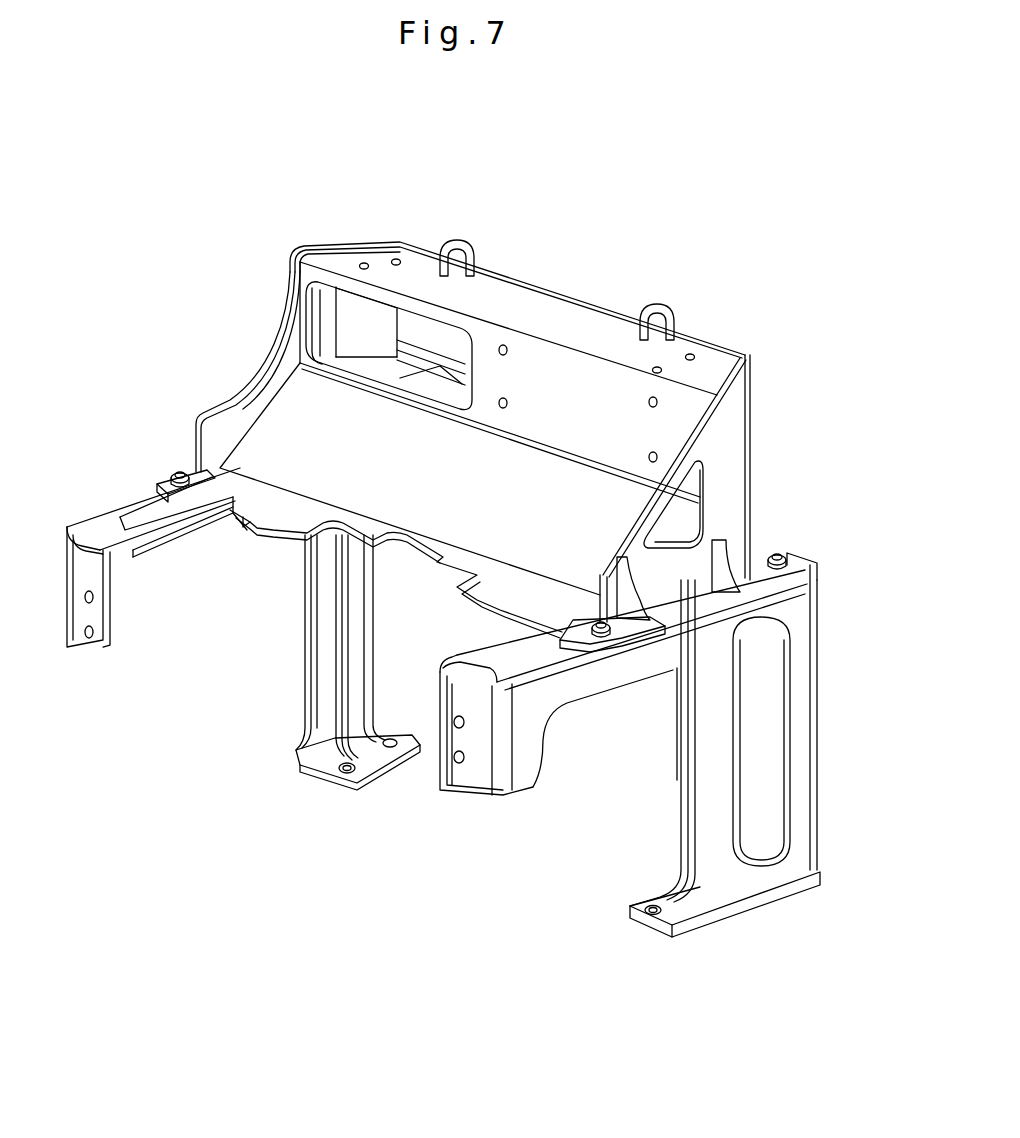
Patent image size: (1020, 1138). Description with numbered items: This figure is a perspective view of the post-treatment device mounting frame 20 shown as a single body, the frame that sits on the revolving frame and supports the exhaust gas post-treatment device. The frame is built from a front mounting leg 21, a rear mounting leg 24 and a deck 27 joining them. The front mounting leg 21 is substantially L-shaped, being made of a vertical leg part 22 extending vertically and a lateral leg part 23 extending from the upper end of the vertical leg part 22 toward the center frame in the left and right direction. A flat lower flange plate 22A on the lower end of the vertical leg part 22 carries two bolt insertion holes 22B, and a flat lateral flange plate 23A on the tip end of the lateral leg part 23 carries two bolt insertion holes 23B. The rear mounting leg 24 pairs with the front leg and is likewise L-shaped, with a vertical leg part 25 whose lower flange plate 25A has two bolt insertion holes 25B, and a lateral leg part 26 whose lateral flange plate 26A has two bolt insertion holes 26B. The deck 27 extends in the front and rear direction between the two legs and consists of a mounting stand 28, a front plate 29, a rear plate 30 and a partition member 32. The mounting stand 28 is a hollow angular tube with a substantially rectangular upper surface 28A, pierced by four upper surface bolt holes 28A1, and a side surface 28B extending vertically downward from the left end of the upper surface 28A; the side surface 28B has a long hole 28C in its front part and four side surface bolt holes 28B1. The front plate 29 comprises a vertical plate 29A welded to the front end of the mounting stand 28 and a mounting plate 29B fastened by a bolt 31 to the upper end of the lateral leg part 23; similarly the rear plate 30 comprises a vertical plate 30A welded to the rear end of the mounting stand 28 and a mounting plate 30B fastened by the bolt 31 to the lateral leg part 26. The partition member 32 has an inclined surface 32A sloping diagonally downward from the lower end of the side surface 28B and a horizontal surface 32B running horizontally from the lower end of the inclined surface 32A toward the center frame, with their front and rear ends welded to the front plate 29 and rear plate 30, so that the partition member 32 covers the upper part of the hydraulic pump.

The post-treatment device mounting frame 20 is at (293, 236).
The front mounting leg 21 is at (302, 639).
The vertical leg part 22 is at (322, 680).
The lower flange plate 22A is at (310, 758).
The bolt insertion holes 22B is at (347, 776).
The lateral leg part 23 is at (155, 530).
The lateral flange plate 23A is at (88, 560).
The bolt insertion holes 23B is at (90, 645).
The rear mounting leg 24 is at (682, 804).
The vertical leg part 25 is at (800, 728).
The lower flange plate 25A is at (757, 903).
The bolt insertion holes 25B is at (652, 914).
The lateral leg part 26 is at (583, 672).
The lateral flange plate 26A is at (480, 745).
The bolt insertion holes 26B is at (458, 763).
The deck 27 is at (550, 292).
The mounting stand 28 is at (733, 355).
The upper surface 28A is at (505, 300).
The upper surface bolt holes 28A1 is at (365, 262).
The side surface 28B is at (598, 400).
The side surface bolt holes 28B1 is at (503, 408).
The long hole 28C is at (430, 322).
The front plate 29 is at (230, 395).
The vertical plate 29A is at (270, 393).
The mounting plate 29B is at (175, 478).
The rear plate 30 is at (745, 475).
The vertical plate 30A is at (722, 425).
The mounting plate 30B is at (630, 640).
The bolt 31 is at (180, 465).
The partition member 32 is at (411, 565).
The inclined surface 32A is at (512, 522).
The horizontal surface 32B is at (295, 508).